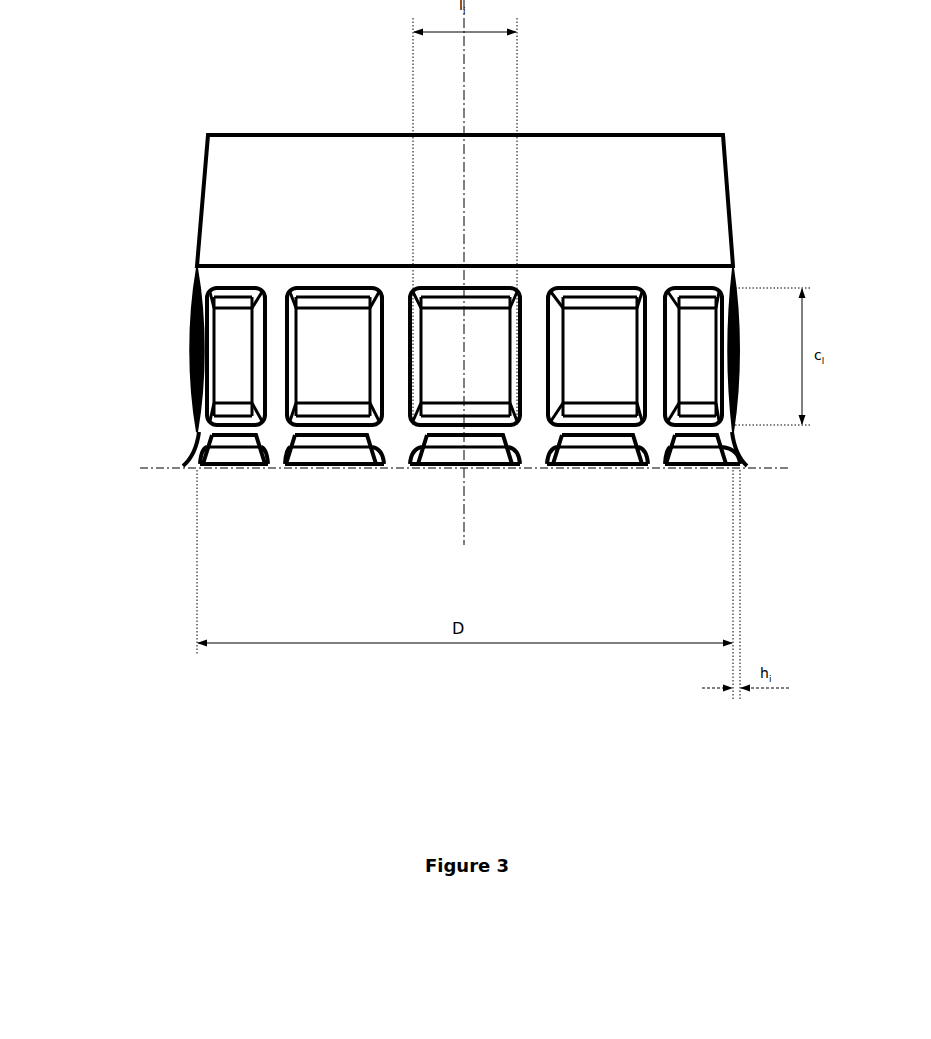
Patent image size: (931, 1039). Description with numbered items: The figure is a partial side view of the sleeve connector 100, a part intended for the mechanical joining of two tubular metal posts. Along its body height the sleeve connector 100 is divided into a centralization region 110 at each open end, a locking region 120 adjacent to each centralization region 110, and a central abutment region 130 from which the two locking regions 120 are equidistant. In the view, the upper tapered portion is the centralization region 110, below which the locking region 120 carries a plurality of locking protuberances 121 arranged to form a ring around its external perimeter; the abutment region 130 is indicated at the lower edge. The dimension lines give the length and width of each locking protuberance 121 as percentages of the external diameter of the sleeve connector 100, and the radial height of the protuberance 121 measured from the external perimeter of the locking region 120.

The sleeve connector 100 is at (151, 40).
The centralization region 110 is at (226, 163).
The locking region 120 is at (172, 359).
The locking protuberance 121 is at (230, 327).
The abutment region 130 is at (122, 427).